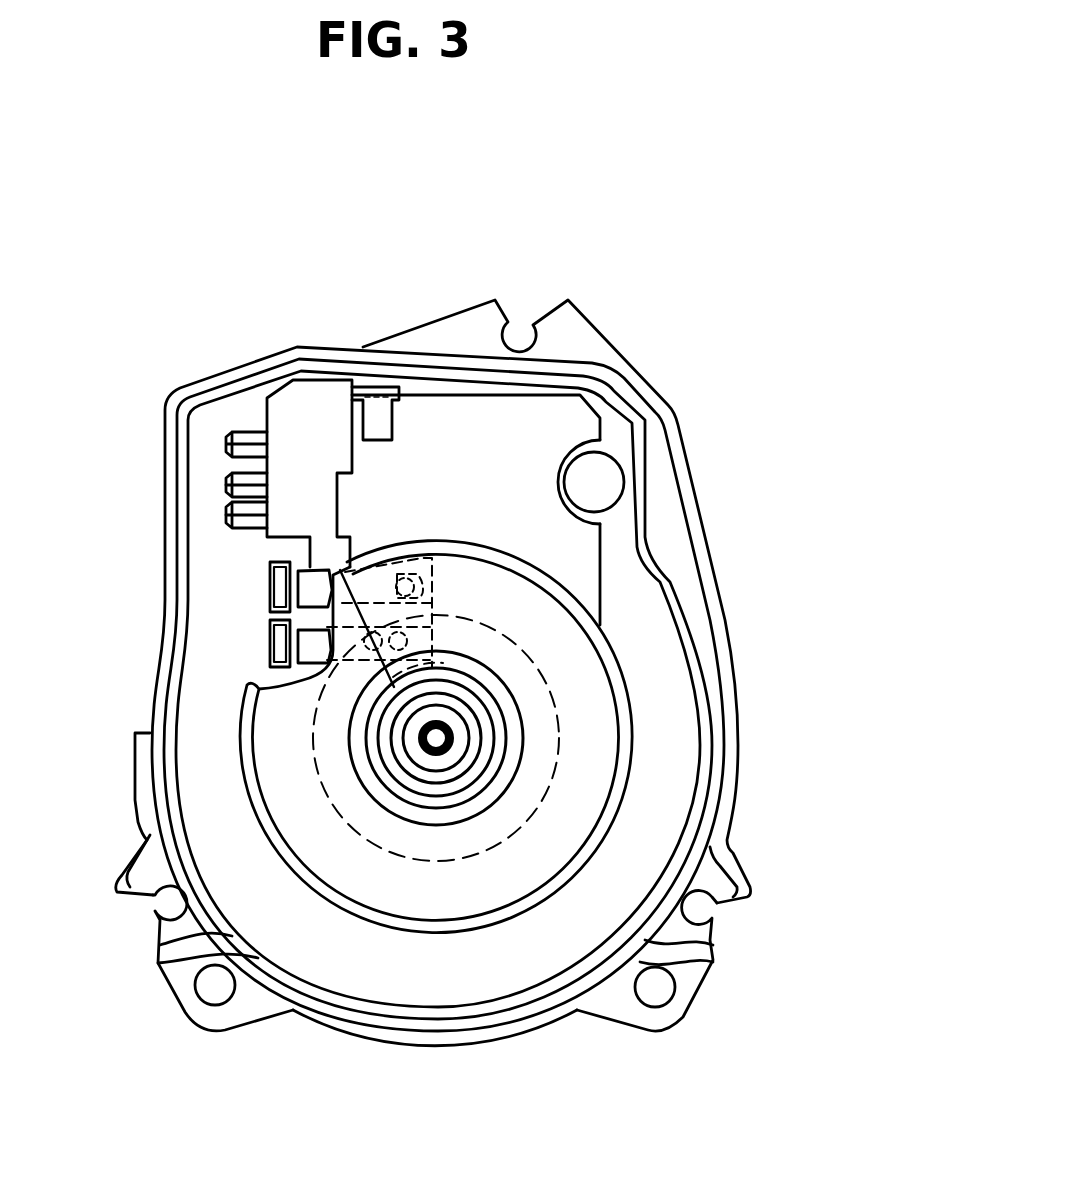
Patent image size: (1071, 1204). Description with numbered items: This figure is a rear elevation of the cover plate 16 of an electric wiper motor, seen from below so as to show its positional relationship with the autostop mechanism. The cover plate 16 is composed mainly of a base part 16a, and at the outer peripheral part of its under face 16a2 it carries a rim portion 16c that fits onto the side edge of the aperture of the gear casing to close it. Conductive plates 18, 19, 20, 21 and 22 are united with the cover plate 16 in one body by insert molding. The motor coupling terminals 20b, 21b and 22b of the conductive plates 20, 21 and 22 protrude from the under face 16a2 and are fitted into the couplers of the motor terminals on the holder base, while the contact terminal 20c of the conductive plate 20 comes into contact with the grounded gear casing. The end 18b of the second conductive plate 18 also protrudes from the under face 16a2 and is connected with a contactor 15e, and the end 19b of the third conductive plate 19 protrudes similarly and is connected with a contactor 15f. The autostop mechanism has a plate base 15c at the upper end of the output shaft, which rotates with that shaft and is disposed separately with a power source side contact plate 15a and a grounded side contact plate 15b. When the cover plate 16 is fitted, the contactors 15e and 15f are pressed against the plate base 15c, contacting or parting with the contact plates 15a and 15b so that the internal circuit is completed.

The power source side contact plate 15a is at (433, 585).
The grounded side contact plate 15b is at (560, 713).
The plate base 15c is at (617, 767).
The contactor 15e is at (352, 552).
The contactor 15f is at (330, 627).
The cover plate 16 is at (642, 372).
The base part 16a is at (687, 597).
The under face 16a2 is at (237, 630).
The rim portion 16c is at (722, 812).
The second conductive plate 18 is at (270, 588).
The end of the second conductive plate 18b is at (270, 600).
The third conductive plate 19 is at (270, 652).
The end of the third conductive plate 19b is at (300, 672).
The conductive plate 20 is at (353, 440).
The motor coupling terminal 20b is at (243, 443).
The contact terminal 20c is at (385, 425).
The conductive plate 21 is at (247, 487).
The motor coupling terminal 21b is at (243, 478).
The conductive plate 22 is at (235, 527).
The motor coupling terminal 22b is at (247, 530).